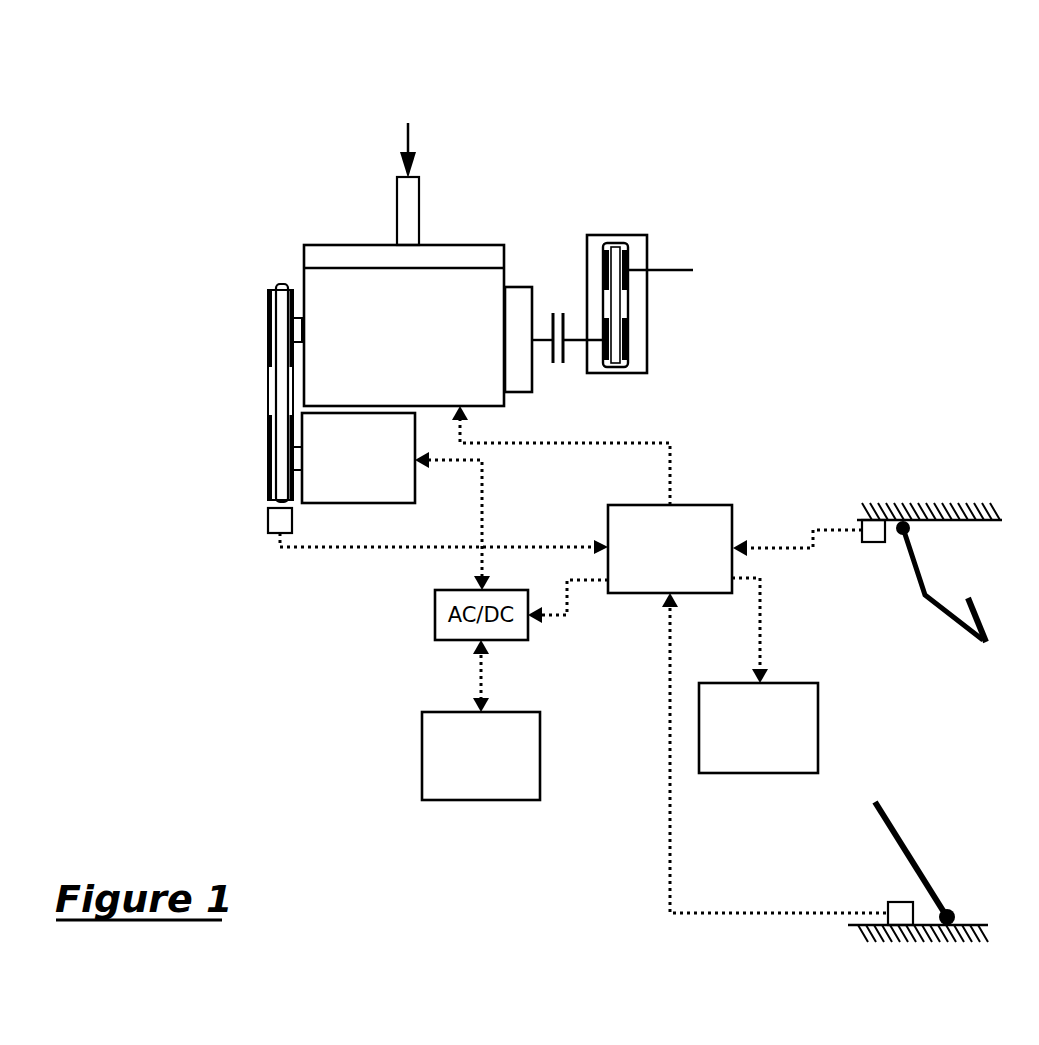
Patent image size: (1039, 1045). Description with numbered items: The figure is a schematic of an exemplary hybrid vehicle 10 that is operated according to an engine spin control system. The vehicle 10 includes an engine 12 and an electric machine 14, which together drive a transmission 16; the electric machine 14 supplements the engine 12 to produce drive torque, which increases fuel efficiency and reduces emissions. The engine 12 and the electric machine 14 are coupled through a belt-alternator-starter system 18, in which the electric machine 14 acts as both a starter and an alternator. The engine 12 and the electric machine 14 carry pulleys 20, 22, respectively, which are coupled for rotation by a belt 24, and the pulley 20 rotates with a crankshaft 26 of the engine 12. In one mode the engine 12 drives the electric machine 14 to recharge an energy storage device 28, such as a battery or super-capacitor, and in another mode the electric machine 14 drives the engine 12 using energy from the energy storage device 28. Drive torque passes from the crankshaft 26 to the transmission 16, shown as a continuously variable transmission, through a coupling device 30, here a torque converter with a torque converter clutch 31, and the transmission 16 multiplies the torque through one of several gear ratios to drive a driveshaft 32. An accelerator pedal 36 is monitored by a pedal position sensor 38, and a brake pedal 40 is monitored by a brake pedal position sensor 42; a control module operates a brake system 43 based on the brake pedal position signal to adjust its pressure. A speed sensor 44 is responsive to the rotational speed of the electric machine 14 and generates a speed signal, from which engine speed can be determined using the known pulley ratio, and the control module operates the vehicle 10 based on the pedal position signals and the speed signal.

The hybrid vehicle 10 is at (878, 155).
The engine 12 is at (508, 272).
The electric machine 14 is at (373, 505).
The transmission 16 is at (631, 235).
The belt-alternator-starter (BAS) system 18 is at (210, 350).
The pulley 20 is at (272, 318).
The pulley 22 is at (268, 460).
The belt 24 is at (282, 282).
The crankshaft 26 is at (298, 318).
The energy storage device 28 is at (422, 712).
The coupling device 30 is at (518, 287).
The torque converter clutch 31 is at (562, 370).
The driveshaft 32 is at (677, 272).
The accelerator pedal 36 is at (890, 822).
The pedal position sensor 38 is at (898, 900).
The brake pedal 40 is at (922, 587).
The brake pedal position sensor 42 is at (857, 515).
The brake system 43 is at (818, 705).
The speed sensor 44 is at (702, 502).